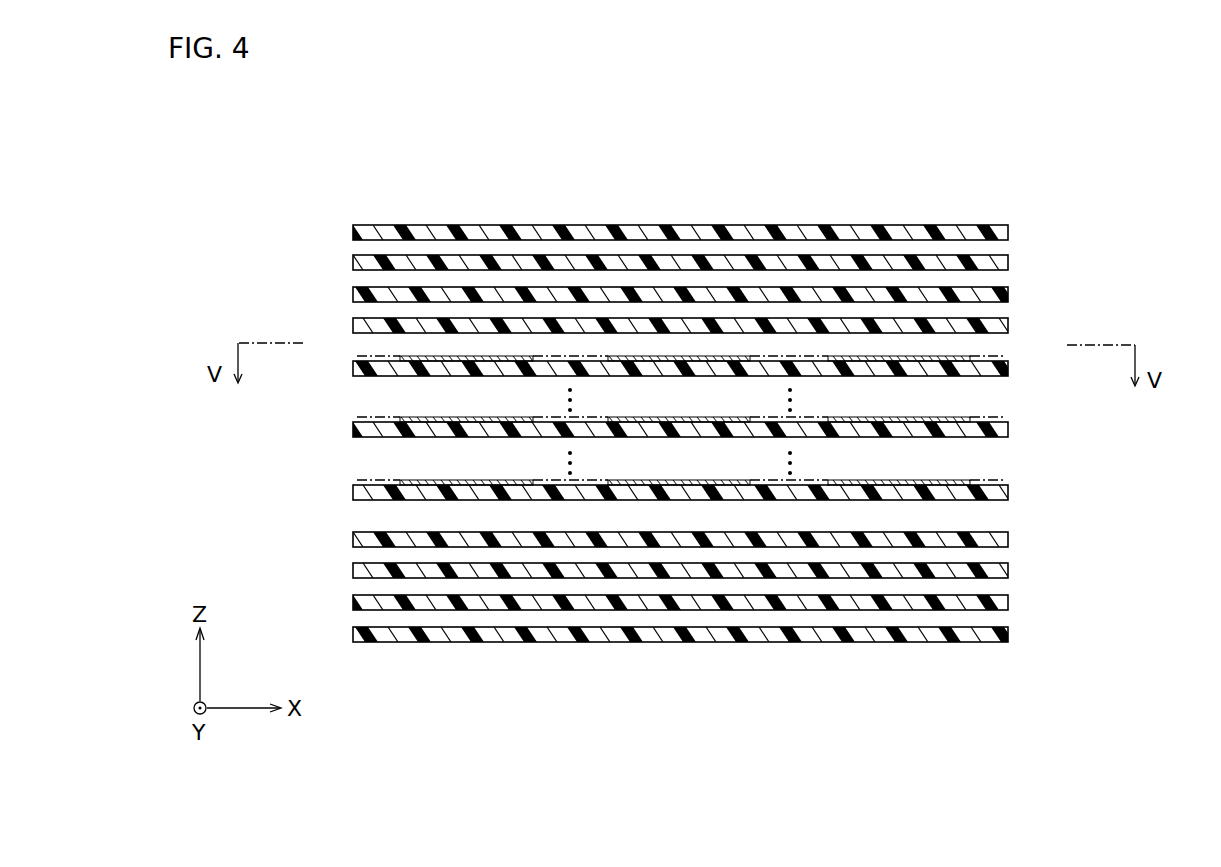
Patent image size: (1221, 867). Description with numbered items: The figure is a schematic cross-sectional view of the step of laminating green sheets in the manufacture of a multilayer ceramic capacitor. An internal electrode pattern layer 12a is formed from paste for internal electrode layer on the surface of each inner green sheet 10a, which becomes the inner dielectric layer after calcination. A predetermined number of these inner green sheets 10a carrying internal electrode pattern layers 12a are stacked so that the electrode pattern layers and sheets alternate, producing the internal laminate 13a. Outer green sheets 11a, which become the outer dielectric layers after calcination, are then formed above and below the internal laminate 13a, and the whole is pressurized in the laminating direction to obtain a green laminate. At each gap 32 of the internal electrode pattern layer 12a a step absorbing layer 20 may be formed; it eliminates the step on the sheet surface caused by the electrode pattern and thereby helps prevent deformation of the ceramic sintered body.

The outer green sheet 11a is at (633, 433).
The internal electrode pattern layer 12a is at (633, 424).
The inner green sheet 10a is at (679, 336).
The internal laminate 13a is at (711, 341).
The step absorbing layer 20 is at (585, 348).
The gap 32 is at (551, 355).